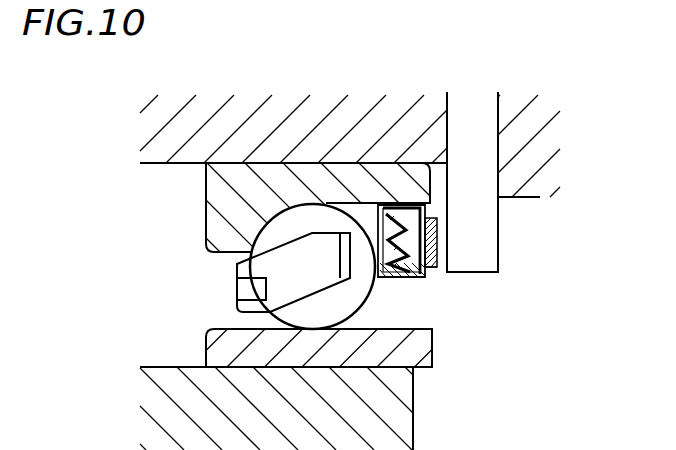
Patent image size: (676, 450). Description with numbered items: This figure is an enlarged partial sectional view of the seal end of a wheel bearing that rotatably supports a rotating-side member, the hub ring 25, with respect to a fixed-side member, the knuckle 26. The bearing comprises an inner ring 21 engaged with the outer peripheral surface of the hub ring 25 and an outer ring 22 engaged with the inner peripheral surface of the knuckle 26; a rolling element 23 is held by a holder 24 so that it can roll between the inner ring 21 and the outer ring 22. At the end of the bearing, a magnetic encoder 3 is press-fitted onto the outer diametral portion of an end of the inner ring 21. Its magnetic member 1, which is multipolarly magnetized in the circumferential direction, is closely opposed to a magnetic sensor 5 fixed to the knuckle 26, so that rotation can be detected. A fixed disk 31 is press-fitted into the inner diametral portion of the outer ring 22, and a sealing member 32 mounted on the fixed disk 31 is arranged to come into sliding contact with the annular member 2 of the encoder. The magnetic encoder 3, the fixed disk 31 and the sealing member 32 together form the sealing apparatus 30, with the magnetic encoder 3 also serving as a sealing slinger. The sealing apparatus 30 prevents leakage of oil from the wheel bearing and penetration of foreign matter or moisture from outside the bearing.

The magnetic member 1 is at (433, 244).
The annular member 2 is at (486, 262).
The magnetic encoder 3 is at (443, 277).
The magnetic sensor 5 is at (479, 127).
The inner ring 21 is at (410, 352).
The outer ring 22 is at (218, 189).
The rolling element 23 is at (283, 225).
The holder 24 is at (252, 261).
The hub ring 25 is at (397, 406).
The knuckle 26 is at (312, 127).
The sealing apparatus 30 is at (478, 159).
The fixed disk 31 is at (410, 206).
The sealing member 32 is at (393, 207).